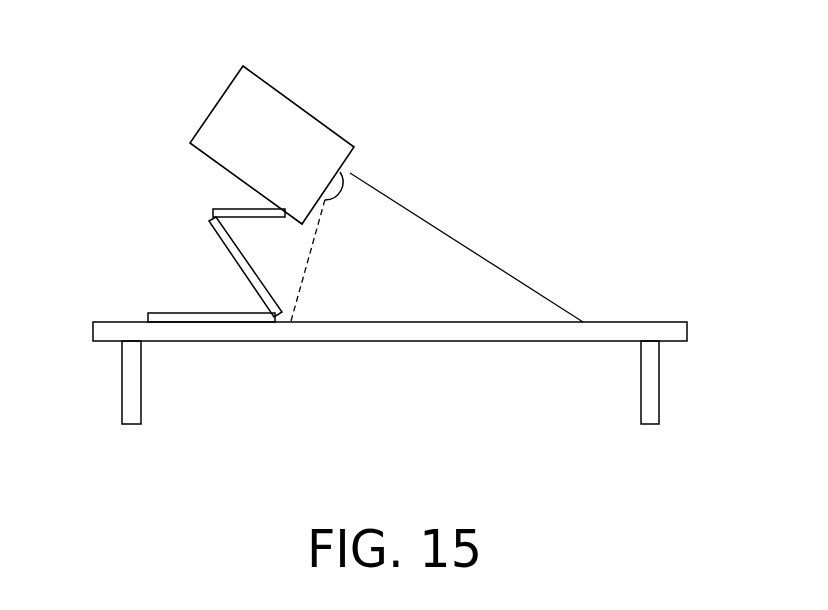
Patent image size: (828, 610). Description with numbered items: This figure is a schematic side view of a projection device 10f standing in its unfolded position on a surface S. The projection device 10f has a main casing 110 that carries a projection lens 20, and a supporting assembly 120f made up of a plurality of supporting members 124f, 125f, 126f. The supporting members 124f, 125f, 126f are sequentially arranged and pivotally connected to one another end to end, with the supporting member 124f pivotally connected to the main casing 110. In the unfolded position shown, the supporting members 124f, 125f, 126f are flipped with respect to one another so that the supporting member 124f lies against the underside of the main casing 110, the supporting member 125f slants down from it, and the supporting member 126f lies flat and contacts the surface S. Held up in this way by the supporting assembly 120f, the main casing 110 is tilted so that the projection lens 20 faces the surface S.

The projection device 10f is at (386, 182).
The main casing 110 is at (315, 138).
The projection lens 20 is at (331, 191).
The supporting assembly 120f is at (94, 25).
The supporting member 124f is at (233, 210).
The supporting member 125f is at (227, 249).
The supporting member 126f is at (200, 316).
The surface S is at (647, 321).